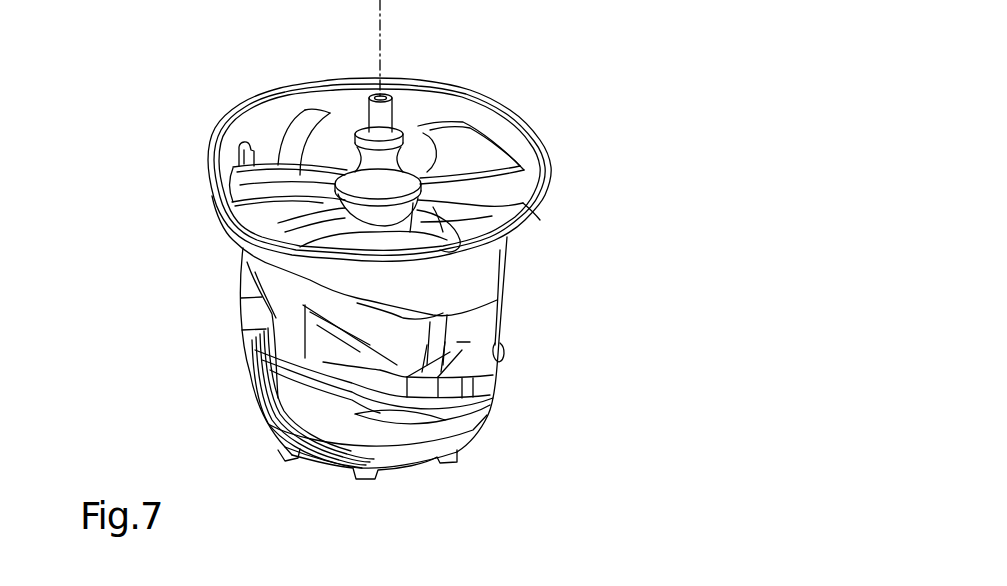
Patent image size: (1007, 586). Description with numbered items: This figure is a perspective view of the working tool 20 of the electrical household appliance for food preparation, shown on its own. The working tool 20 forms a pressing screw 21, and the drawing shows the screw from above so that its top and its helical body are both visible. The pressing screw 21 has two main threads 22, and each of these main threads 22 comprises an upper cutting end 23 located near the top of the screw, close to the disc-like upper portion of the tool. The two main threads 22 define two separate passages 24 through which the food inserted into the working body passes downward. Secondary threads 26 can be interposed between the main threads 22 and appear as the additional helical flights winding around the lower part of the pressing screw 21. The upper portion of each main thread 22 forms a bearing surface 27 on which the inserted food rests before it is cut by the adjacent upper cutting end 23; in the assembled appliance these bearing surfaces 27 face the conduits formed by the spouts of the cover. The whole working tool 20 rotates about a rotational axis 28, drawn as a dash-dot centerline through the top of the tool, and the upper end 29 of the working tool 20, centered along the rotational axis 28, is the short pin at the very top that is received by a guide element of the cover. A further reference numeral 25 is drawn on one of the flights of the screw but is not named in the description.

The working tool 20 is at (690, 269).
The pressing screw 21 is at (503, 388).
The main threads 22 is at (257, 262).
The upper cutting end 23 is at (277, 162).
The passages 24 is at (237, 157).
The rib 25 is at (303, 342).
The secondary threads 26 is at (405, 428).
The bearing surface 27 is at (322, 147).
The rotational axis 28 is at (379, 31).
The upper end 29 is at (383, 112).